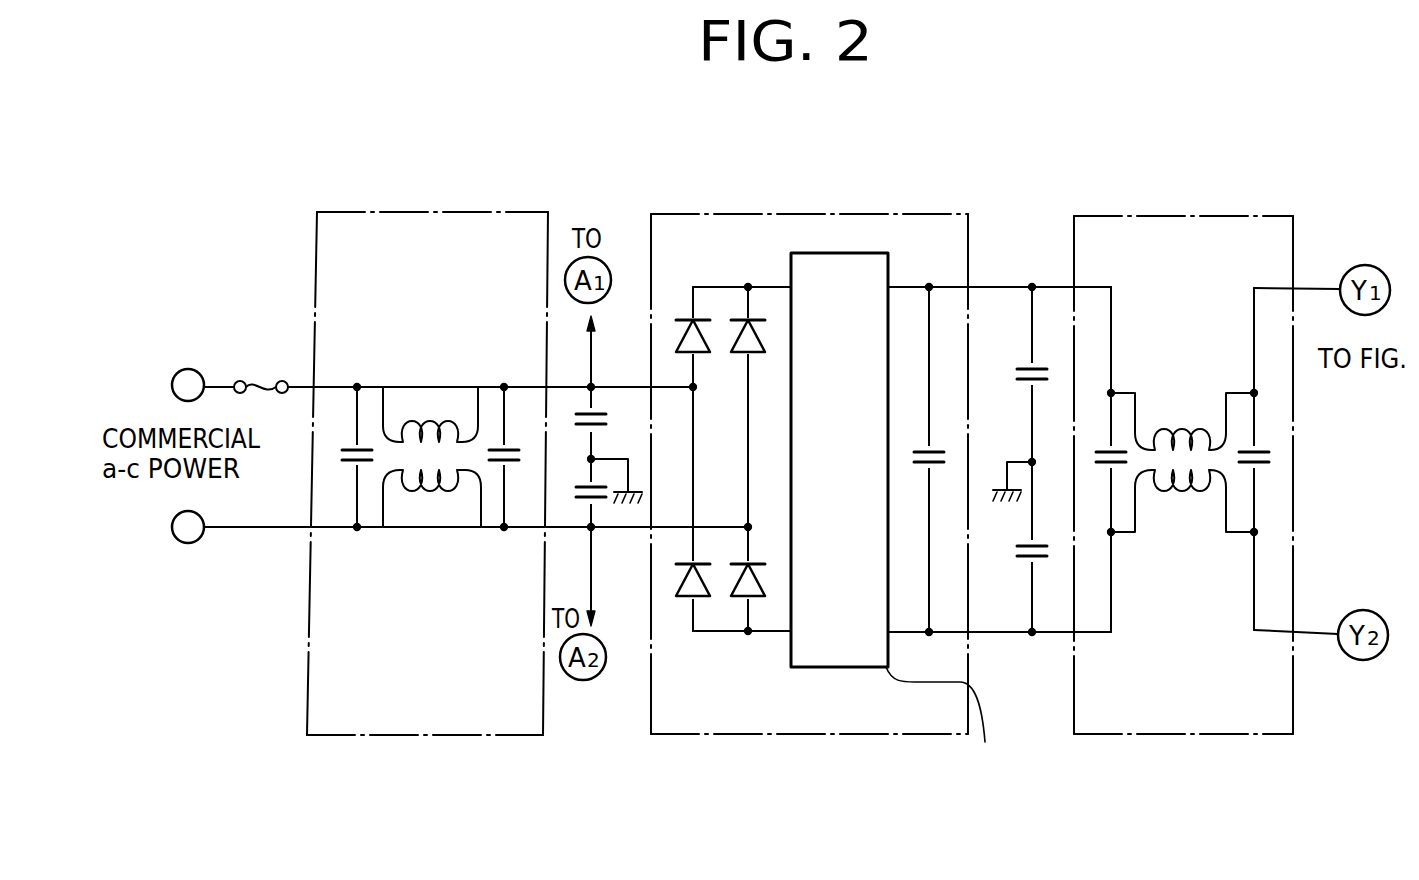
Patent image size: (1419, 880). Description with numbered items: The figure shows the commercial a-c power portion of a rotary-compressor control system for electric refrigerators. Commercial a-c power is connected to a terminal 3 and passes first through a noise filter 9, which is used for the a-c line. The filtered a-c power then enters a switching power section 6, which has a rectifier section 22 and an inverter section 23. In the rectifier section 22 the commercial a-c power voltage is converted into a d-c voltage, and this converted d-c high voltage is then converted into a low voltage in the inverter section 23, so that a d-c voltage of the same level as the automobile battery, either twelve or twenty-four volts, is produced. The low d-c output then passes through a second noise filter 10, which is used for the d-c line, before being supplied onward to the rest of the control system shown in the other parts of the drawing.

The terminal 3 is at (184, 369).
The noise filter 9 is at (463, 212).
The switching power section 6 is at (896, 456).
The rectifier section 22 is at (718, 287).
The inverter section 23 is at (826, 253).
The noise filter 10 is at (1168, 216).